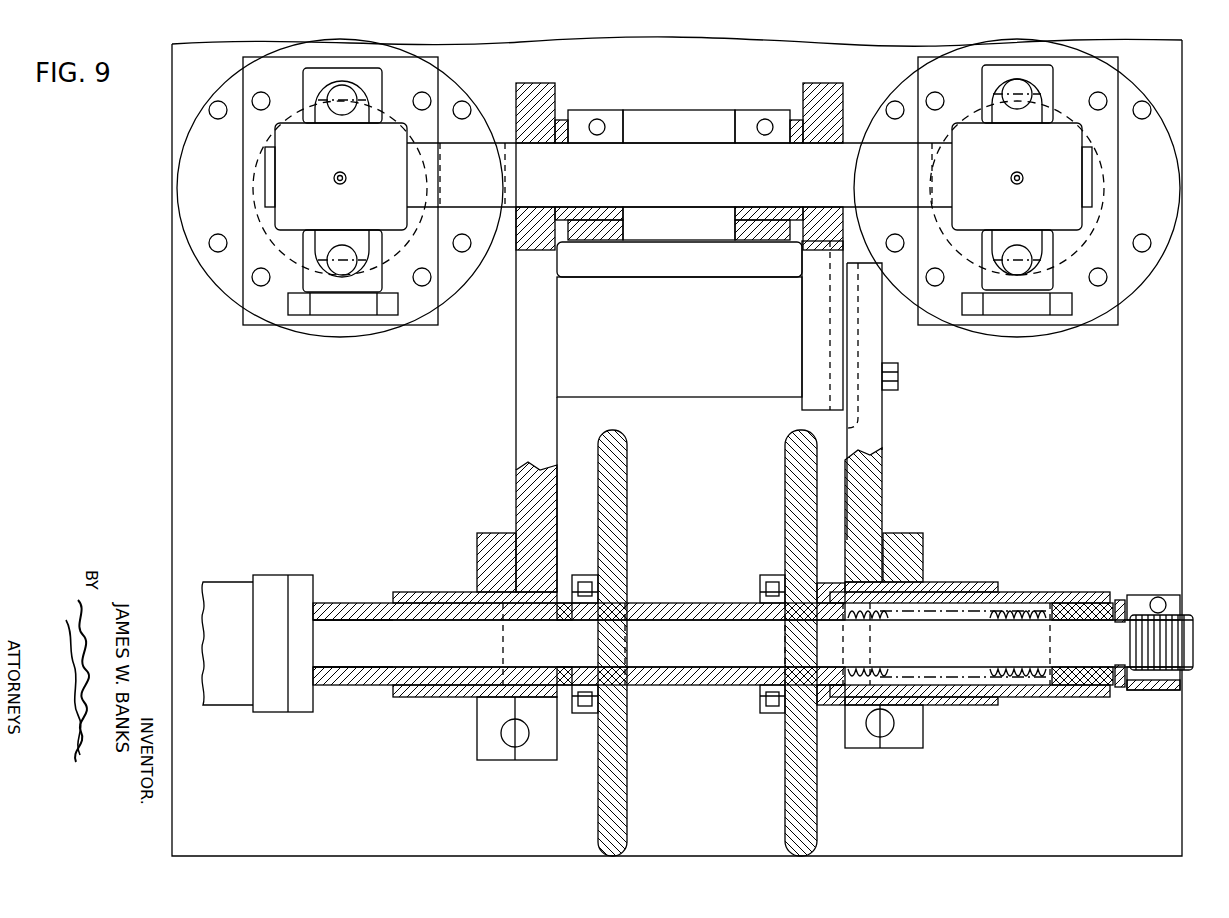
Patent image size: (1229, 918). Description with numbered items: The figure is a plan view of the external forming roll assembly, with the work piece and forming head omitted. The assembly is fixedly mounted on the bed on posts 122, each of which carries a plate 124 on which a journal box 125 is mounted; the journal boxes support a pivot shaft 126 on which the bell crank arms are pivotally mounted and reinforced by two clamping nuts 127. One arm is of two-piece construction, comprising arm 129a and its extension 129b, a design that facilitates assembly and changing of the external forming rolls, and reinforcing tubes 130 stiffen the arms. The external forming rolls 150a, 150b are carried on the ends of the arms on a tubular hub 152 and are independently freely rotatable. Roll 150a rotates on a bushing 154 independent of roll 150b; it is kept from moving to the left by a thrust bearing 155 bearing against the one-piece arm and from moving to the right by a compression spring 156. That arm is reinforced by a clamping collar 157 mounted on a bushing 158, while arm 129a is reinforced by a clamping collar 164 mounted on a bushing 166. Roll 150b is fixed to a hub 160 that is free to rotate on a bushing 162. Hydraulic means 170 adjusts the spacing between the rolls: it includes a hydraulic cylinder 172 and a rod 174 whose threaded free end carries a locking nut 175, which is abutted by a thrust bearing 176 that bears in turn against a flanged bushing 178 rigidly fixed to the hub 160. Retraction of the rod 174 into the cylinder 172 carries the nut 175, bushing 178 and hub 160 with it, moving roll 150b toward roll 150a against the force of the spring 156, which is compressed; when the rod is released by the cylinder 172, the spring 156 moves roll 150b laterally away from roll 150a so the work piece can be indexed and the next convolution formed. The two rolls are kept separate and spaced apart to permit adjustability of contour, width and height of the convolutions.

The post 122 is at (260, 157).
The plate 124 is at (243, 216).
The journal box 125 is at (323, 157).
The pivot shaft 126 is at (270, 186).
The clamping nut 127 is at (612, 122).
The bell crank arm 129a is at (868, 432).
The extension 129b is at (803, 400).
The reinforcing tube 130 is at (714, 390).
The external forming roll 150a is at (618, 485).
The external forming roll 150b is at (785, 464).
The tubular hub 152 is at (707, 600).
The bushing 154 is at (810, 617).
The thrust bearing 155 is at (562, 600).
The compression spring 156 is at (1008, 608).
The clamping collar 157 is at (477, 566).
The bushing 158 is at (395, 592).
The hub 160 is at (795, 560).
The bushing 162 is at (790, 595).
The clamping collar 164 is at (905, 545).
The bushing 166 is at (935, 582).
The hydraulic means 170 is at (218, 595).
The hydraulic cylinder 172 is at (244, 590).
The rod 174 is at (385, 655).
The locking nut 175 is at (1165, 597).
The thrust bearing 176 is at (1120, 595).
The flanged bushing 178 is at (1070, 605).